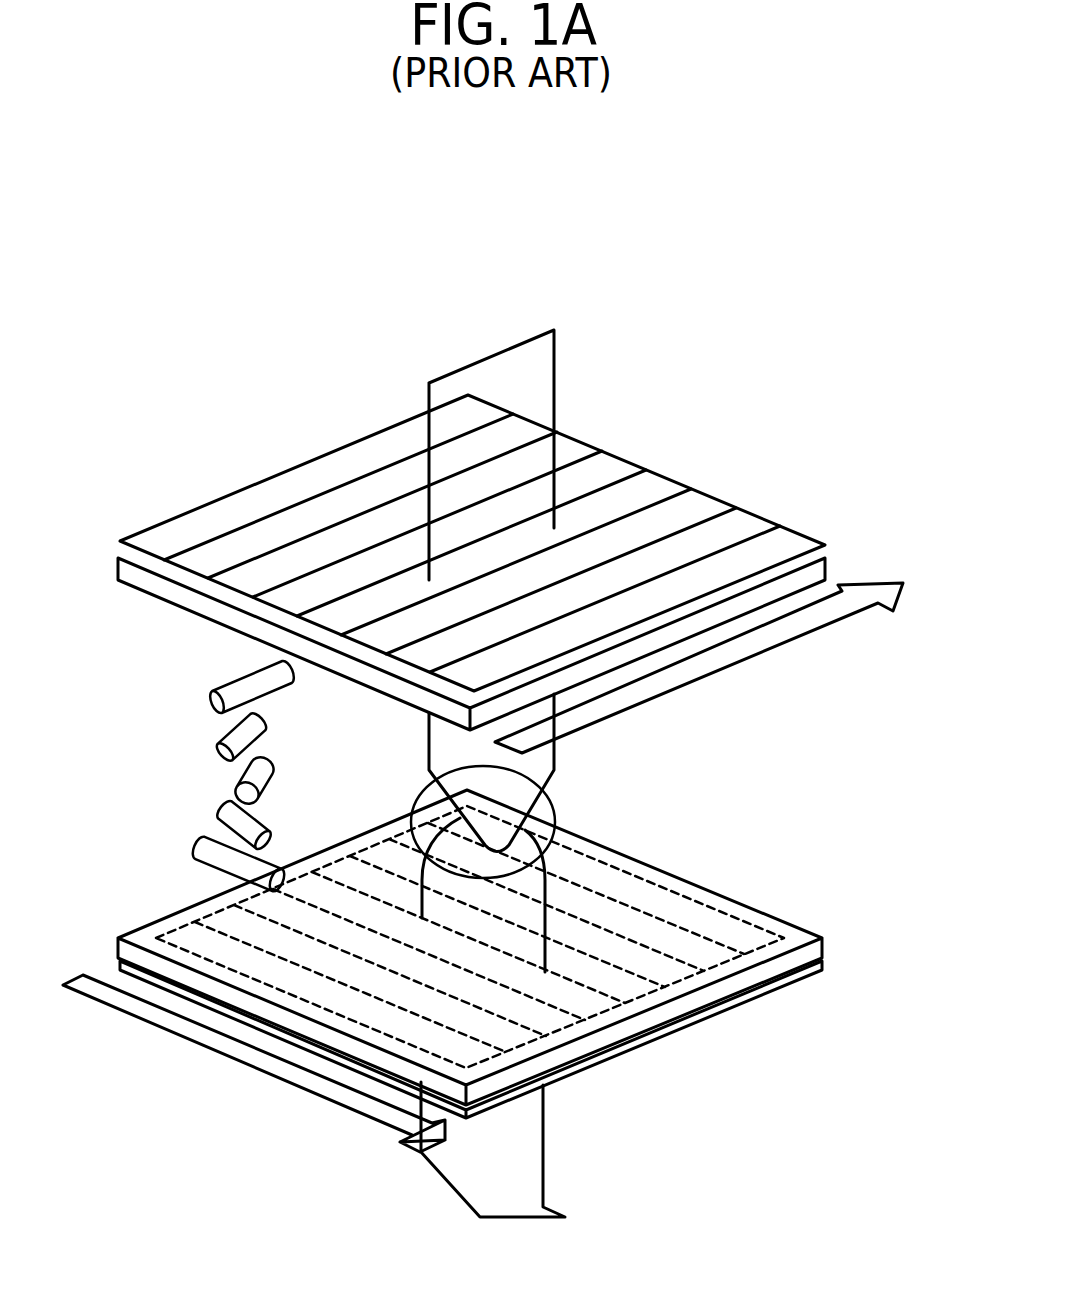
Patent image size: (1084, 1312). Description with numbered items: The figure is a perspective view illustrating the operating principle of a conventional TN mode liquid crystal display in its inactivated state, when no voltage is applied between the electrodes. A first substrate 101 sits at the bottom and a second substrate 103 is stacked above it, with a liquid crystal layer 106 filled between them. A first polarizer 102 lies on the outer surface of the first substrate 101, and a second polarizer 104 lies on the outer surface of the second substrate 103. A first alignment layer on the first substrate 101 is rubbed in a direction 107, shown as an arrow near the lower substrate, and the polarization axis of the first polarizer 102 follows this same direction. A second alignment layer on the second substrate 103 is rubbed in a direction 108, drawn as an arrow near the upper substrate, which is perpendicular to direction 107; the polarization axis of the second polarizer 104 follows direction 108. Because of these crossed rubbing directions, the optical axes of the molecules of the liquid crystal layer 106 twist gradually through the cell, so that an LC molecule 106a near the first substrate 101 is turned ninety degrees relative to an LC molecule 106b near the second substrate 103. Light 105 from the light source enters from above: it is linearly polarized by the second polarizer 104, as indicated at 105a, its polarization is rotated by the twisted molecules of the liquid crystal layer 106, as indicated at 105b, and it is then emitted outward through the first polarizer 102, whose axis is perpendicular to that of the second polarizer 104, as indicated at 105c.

The first substrate 101 is at (820, 950).
The first polarizer 102 is at (793, 977).
The second substrate 103 is at (812, 577).
The second polarizer 104 is at (792, 530).
The light 105 is at (546, 364).
The linearly polarized light 105a is at (542, 707).
The rotated light 105b is at (577, 808).
The externally emitted light 105c is at (532, 1145).
The liquid crystal layer 106 is at (193, 847).
The LC molecule 106a is at (225, 857).
The LC molecule 106b is at (242, 690).
The rubbing direction of first alignment layer 107 is at (230, 1050).
The rubbing direction of second alignment layer 108 is at (713, 665).